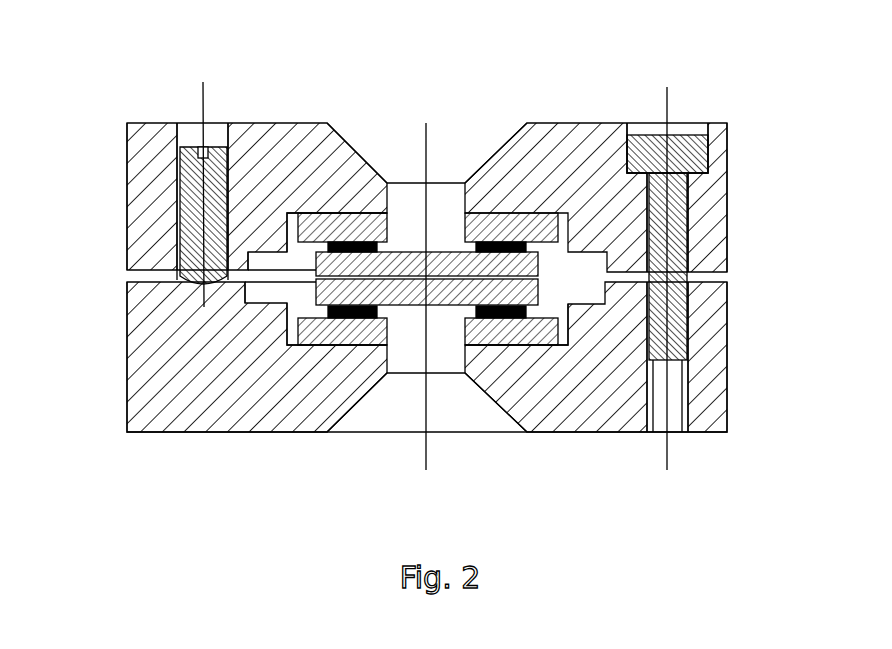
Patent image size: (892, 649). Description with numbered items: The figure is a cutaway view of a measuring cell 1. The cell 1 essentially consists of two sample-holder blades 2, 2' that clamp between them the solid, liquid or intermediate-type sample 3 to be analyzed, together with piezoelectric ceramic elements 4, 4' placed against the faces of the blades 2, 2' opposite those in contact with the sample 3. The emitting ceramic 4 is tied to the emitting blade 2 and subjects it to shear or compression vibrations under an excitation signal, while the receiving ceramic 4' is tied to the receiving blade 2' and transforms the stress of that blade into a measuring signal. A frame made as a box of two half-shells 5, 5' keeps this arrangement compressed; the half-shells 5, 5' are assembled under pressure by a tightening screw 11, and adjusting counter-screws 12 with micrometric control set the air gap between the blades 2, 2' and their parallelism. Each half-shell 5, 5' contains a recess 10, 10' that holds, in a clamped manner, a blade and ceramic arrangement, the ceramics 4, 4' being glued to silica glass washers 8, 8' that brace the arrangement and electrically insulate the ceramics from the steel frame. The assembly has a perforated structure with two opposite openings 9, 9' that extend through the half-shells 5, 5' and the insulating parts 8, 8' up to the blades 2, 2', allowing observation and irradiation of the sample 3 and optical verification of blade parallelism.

The measuring cell 1 is at (164, 516).
The sample-holder blade 2 is at (445, 157).
The sample-holder blade 2' is at (309, 294).
The sample 3 is at (458, 272).
The piezoelectric ceramic element 4 is at (425, 152).
The piezoelectric ceramic element 4' is at (428, 422).
The half-shell 5 is at (465, 197).
The half-shell 5' is at (404, 357).
The part for bracing and electrical insulation 8 is at (298, 139).
The part for bracing and electrical insulation 8' is at (297, 389).
The opening 9 is at (427, 250).
The opening 9' is at (427, 444).
The recess 10 is at (229, 160).
The recess 10' is at (557, 409).
The tightening screw 11 is at (683, 230).
The adjusting counter-screw 12 is at (168, 162).